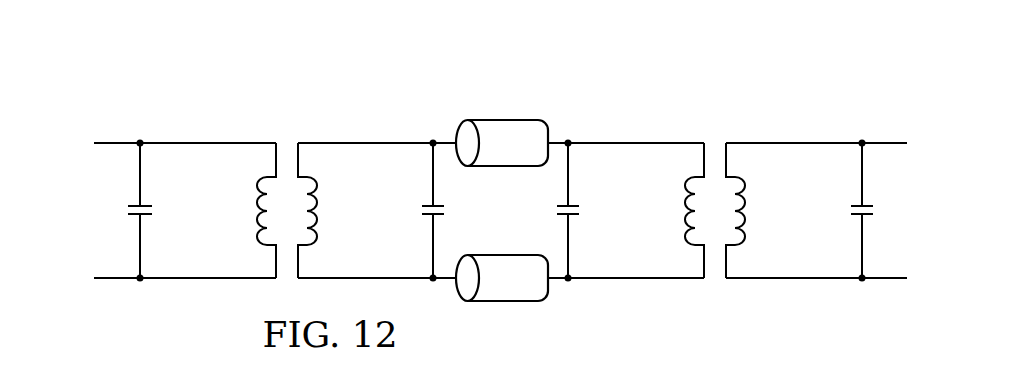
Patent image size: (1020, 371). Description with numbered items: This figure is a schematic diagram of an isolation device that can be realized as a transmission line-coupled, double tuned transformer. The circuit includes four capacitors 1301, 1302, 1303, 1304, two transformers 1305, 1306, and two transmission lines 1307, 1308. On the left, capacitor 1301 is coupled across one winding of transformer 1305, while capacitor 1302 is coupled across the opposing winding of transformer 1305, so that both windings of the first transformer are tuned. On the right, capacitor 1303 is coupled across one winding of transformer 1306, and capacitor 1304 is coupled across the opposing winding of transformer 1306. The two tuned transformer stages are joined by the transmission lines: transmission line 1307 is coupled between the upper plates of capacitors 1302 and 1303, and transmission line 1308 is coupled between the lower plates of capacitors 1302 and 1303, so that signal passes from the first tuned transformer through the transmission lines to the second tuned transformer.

The capacitor 1301 is at (127, 210).
The capacitor 1302 is at (421, 210).
The capacitor 1303 is at (580, 210).
The capacitor 1304 is at (874, 210).
The transformer 1305 is at (284, 153).
The transformer 1306 is at (718, 153).
The transmission line 1307 is at (500, 118).
The transmission line 1308 is at (499, 302).